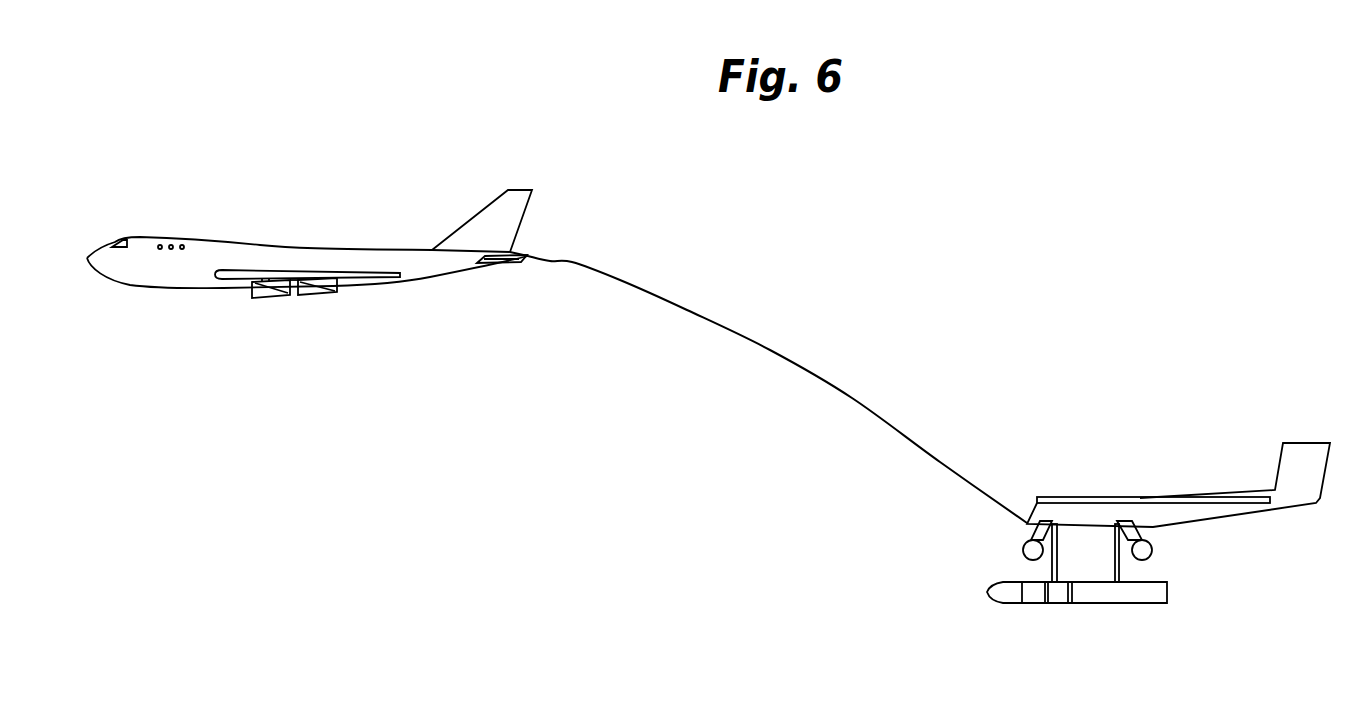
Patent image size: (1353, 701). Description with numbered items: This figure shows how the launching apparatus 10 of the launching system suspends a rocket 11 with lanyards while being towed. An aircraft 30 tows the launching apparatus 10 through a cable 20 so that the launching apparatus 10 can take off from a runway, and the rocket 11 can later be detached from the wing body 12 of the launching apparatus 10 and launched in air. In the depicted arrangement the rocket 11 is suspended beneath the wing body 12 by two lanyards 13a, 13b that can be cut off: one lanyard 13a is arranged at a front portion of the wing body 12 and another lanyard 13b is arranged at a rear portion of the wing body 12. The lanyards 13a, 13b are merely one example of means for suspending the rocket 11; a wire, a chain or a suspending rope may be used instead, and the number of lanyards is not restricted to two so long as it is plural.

The aircraft 30 is at (375, 256).
The cable 20 is at (853, 396).
The launching apparatus 10 is at (1123, 539).
The wing body 12 is at (1073, 510).
The lanyard 13a is at (1050, 568).
The lanyard 13b is at (1120, 563).
The rocket 11 is at (1088, 590).